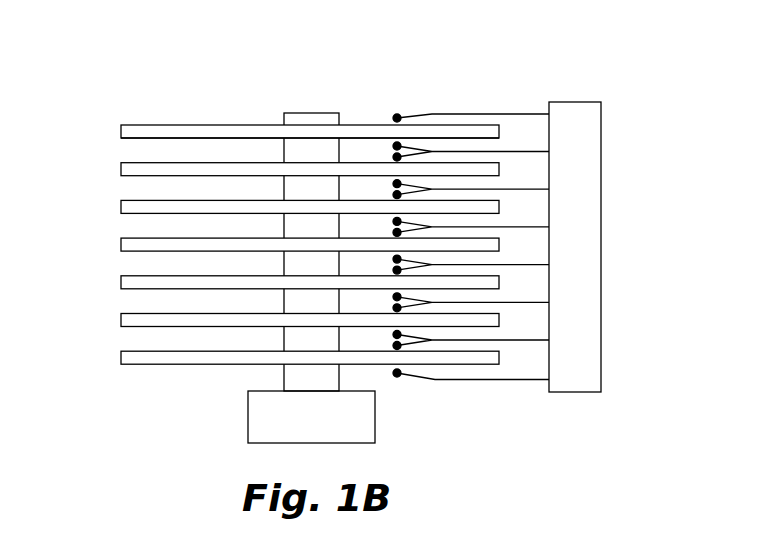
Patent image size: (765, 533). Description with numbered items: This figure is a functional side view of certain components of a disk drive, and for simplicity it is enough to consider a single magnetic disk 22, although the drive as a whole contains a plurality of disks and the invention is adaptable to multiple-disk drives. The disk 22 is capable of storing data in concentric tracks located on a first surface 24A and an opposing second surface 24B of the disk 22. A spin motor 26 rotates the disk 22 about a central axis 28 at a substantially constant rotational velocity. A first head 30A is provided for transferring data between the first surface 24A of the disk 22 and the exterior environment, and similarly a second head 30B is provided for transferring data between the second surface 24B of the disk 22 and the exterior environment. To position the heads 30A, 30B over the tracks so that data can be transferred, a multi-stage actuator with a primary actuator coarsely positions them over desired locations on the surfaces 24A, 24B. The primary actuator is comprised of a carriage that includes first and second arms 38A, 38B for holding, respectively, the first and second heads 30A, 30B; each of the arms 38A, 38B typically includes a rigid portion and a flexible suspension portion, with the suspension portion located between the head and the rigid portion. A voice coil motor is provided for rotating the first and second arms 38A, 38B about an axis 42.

The magnetic disk 22 is at (273, 190).
The first surface 24A is at (172, 125).
The second surface 24B is at (135, 138).
The spin motor 26 is at (220, 407).
The central axis 28 is at (313, 113).
The first head 30A is at (398, 118).
The second head 30B is at (390, 151).
The first arm 38A is at (518, 79).
The second arm 38B is at (506, 112).
The axis 42 is at (575, 102).